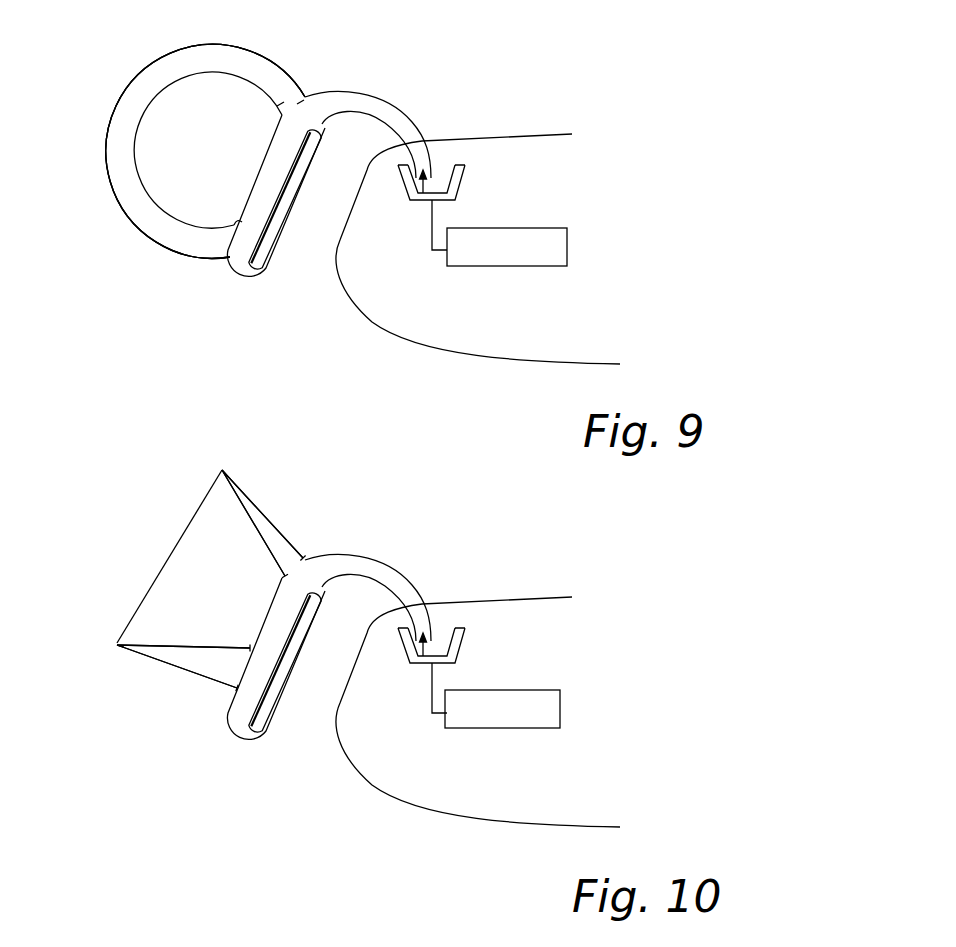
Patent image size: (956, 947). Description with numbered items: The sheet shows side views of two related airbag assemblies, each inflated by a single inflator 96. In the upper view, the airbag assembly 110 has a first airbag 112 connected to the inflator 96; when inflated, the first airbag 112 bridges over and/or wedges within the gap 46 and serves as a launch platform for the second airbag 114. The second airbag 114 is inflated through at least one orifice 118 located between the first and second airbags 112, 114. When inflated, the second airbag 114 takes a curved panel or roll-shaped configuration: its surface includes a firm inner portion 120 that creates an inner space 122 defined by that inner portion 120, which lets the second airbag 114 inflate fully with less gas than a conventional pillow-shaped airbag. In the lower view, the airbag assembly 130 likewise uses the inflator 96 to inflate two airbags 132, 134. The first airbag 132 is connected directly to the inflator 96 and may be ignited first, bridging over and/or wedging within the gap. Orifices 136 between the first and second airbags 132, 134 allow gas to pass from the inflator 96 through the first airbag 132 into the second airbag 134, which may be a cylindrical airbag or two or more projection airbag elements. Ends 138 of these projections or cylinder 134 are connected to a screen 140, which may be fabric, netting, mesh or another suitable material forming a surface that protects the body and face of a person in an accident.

In FIG. 9, the gap 46 is at (335, 178).
In FIG. 9, the inflator 96 is at (495, 266).
In FIG. 10, the inflator 96 is at (492, 728).
In FIG. 9, the airbag assembly 110 is at (156, 273).
In FIG. 9, the first airbag 112 is at (385, 110).
In FIG. 9, the second airbag 114 is at (240, 62).
In FIG. 9, the orifice 118 is at (299, 90).
In FIG. 9, the inner portion 120 is at (128, 155).
In FIG. 9, the inner space 122 is at (180, 98).
In FIG. 10, the airbag assembly 130 is at (155, 737).
In FIG. 10, the first airbag 132 is at (385, 577).
In FIG. 10, the second airbag 134 is at (250, 490).
In FIG. 10, the orifices 136 is at (292, 553).
In FIG. 10, the ends 138 is at (222, 470).
In FIG. 10, the screen 140 is at (183, 532).